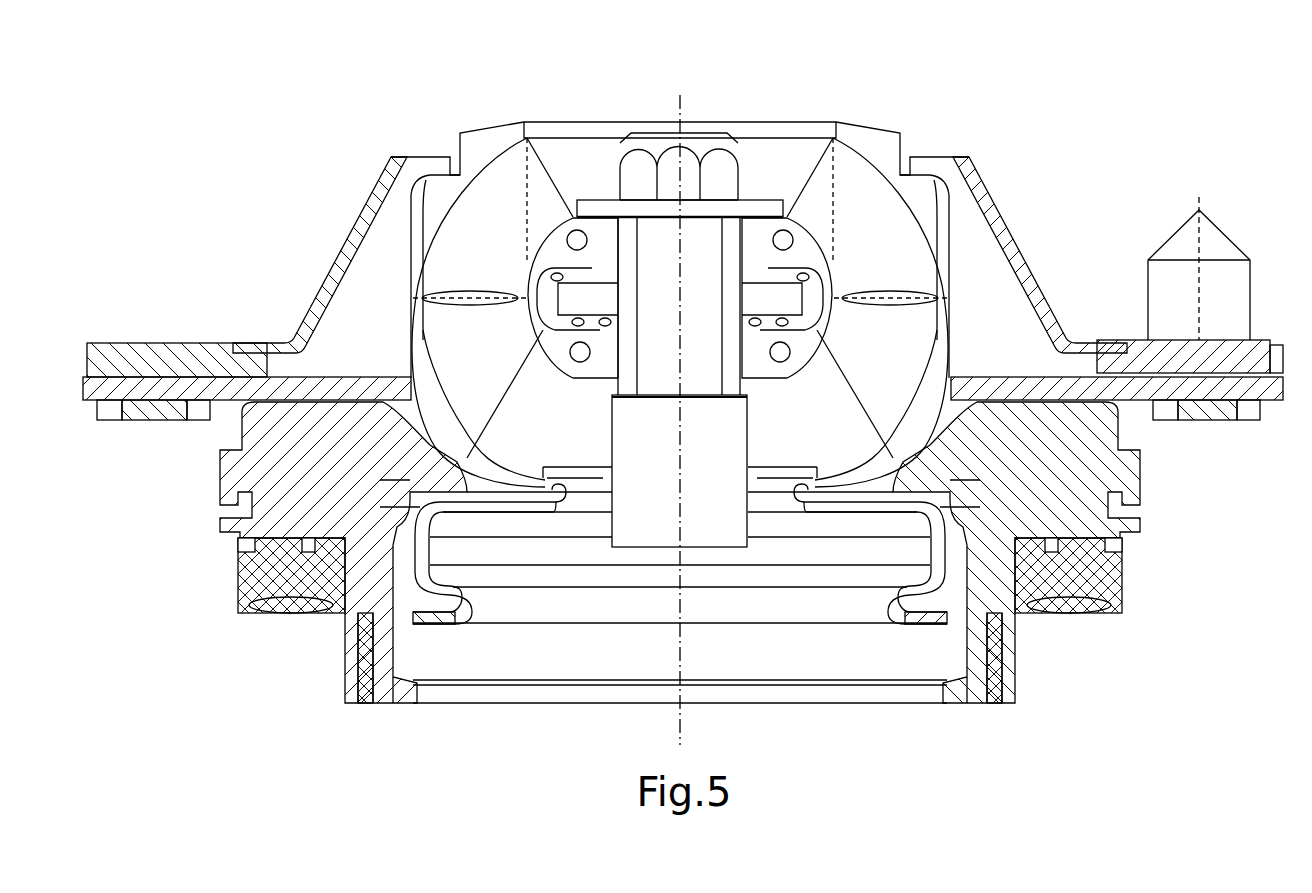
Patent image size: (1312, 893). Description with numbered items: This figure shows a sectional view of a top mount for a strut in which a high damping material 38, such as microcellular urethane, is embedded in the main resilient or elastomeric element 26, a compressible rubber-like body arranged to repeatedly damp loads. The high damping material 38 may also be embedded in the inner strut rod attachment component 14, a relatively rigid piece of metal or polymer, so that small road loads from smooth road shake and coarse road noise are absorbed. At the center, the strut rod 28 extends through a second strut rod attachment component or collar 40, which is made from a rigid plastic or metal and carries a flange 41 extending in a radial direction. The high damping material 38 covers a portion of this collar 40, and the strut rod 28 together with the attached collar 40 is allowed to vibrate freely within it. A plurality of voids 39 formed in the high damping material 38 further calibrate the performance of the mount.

The inner strut rod attachment component 14 is at (534, 257).
The main resilient or elastomeric element 26 is at (462, 185).
The strut rod 28 is at (686, 120).
The high damping material 38 is at (603, 262).
The voids 39 is at (1160, 474).
The second strut rod attachment component 40 is at (750, 268).
The flange 41 is at (528, 295).